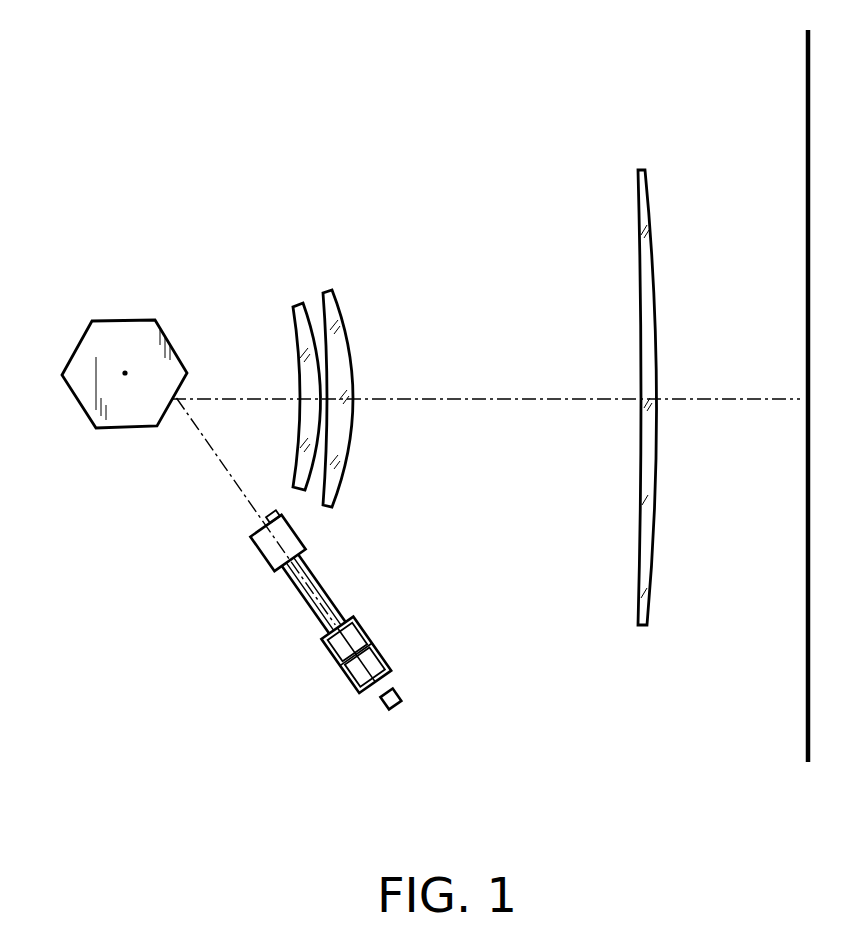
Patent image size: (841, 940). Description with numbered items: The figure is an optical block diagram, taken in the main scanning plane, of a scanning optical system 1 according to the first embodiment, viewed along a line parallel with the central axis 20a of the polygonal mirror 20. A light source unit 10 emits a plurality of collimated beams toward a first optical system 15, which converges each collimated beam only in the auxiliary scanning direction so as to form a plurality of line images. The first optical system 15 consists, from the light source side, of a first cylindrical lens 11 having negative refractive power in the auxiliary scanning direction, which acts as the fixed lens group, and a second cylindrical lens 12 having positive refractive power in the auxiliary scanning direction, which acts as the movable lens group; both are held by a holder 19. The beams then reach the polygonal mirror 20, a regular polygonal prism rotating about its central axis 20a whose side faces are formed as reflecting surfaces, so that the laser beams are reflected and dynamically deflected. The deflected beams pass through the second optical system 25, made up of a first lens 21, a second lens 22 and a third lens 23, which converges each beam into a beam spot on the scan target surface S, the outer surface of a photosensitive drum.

The scanning optical system 1 is at (84, 133).
The light source unit 10 is at (401, 697).
The first cylindrical lens 11 is at (388, 663).
The second cylindrical lens 12 is at (358, 622).
The first optical system 15 is at (458, 572).
The holder 19 is at (362, 601).
The polygonal mirror 20 is at (121, 362).
The central axis 20a is at (125, 375).
The first lens 21 is at (303, 303).
The second lens 22 is at (333, 297).
The third lens 23 is at (641, 170).
The second optical system 25 is at (652, 80).
The scan target surface S is at (803, 610).